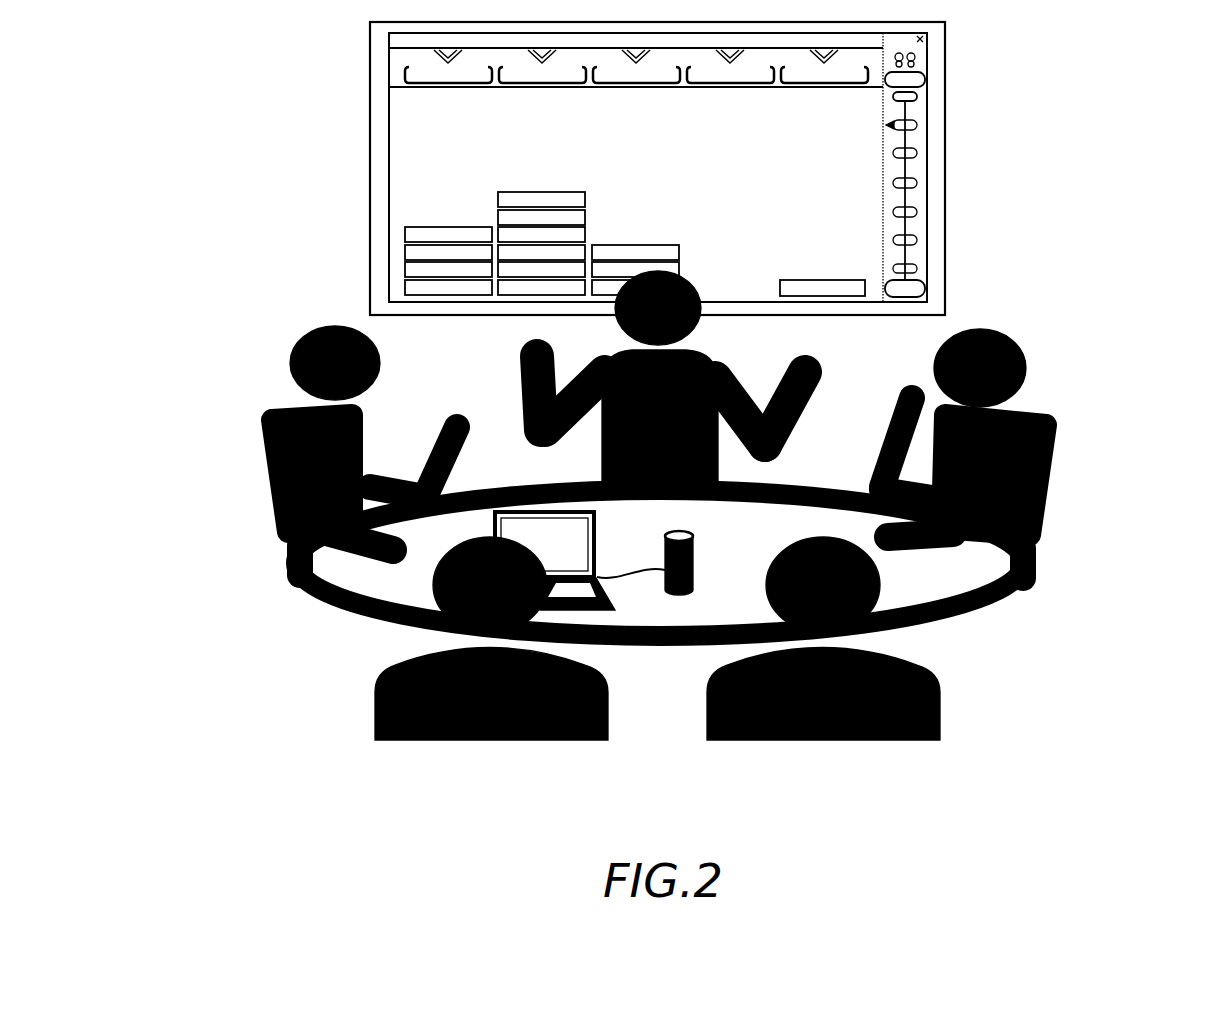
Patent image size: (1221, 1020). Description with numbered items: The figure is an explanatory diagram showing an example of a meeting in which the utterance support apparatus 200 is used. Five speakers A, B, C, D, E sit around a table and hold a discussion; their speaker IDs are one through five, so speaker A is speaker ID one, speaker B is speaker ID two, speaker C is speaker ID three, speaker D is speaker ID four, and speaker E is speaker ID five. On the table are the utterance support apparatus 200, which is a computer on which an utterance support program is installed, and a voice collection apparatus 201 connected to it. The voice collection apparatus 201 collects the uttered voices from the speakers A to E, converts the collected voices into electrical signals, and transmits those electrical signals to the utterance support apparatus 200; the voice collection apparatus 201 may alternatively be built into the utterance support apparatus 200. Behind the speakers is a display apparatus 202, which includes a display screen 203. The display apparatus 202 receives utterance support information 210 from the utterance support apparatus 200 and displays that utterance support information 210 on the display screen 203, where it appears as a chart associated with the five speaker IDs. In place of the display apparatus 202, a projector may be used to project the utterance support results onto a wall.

The utterance support apparatus 200 is at (597, 533).
The voice collection apparatus 201 is at (693, 550).
The display apparatus 202 is at (370, 180).
The display screen 203 is at (945, 167).
The utterance support information 210 is at (412, 148).
The speaker A is at (296, 350).
The speaker B is at (820, 385).
The speaker C is at (1025, 362).
The speaker D is at (375, 717).
The speaker E is at (940, 712).